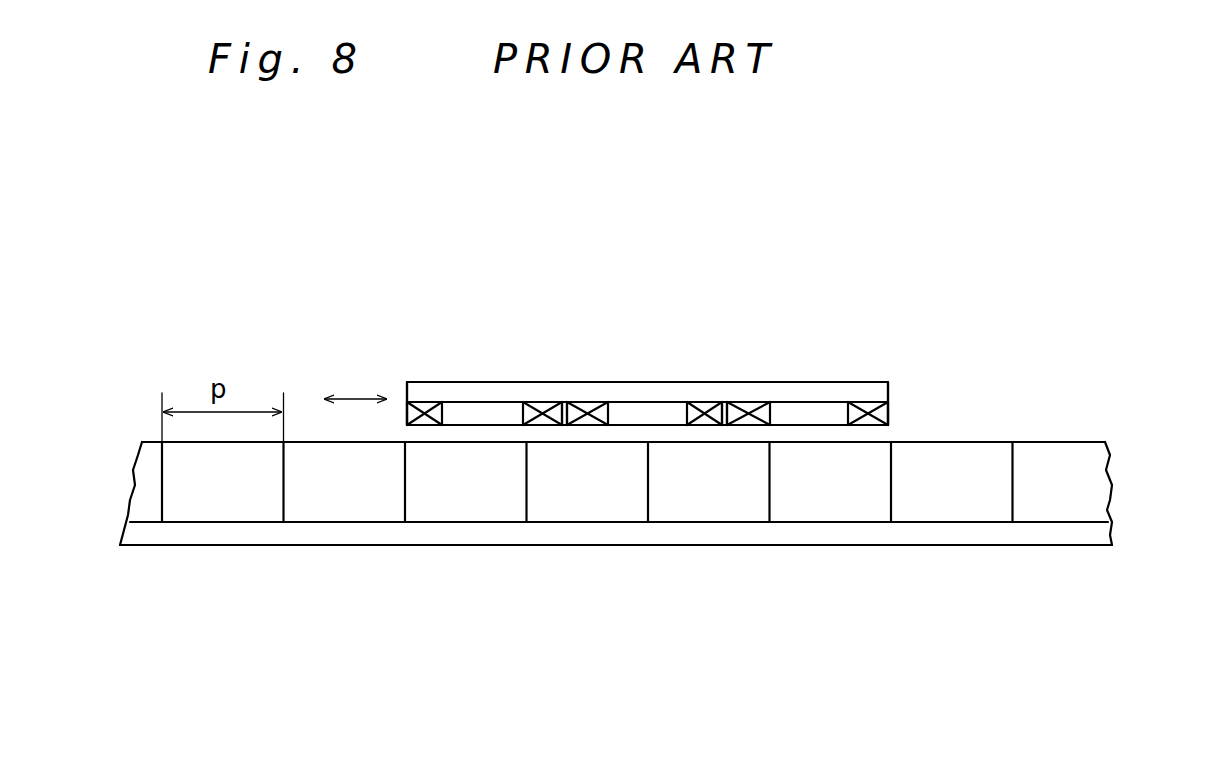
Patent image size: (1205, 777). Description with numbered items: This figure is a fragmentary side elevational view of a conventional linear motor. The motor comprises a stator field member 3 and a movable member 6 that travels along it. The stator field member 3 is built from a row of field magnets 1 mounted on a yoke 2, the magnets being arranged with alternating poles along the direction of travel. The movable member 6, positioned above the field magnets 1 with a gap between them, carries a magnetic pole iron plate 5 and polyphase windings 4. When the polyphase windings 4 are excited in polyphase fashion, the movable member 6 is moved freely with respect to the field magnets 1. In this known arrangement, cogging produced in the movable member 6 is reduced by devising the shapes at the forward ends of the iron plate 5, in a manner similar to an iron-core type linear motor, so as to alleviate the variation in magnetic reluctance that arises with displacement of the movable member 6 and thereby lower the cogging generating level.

The field magnets 1 is at (312, 463).
The yoke 2 is at (946, 533).
The stator field member 3 is at (1112, 500).
The polyphase windings 4 is at (480, 413).
The magnetic pole iron plate 5 is at (767, 393).
The movable member 6 is at (903, 413).